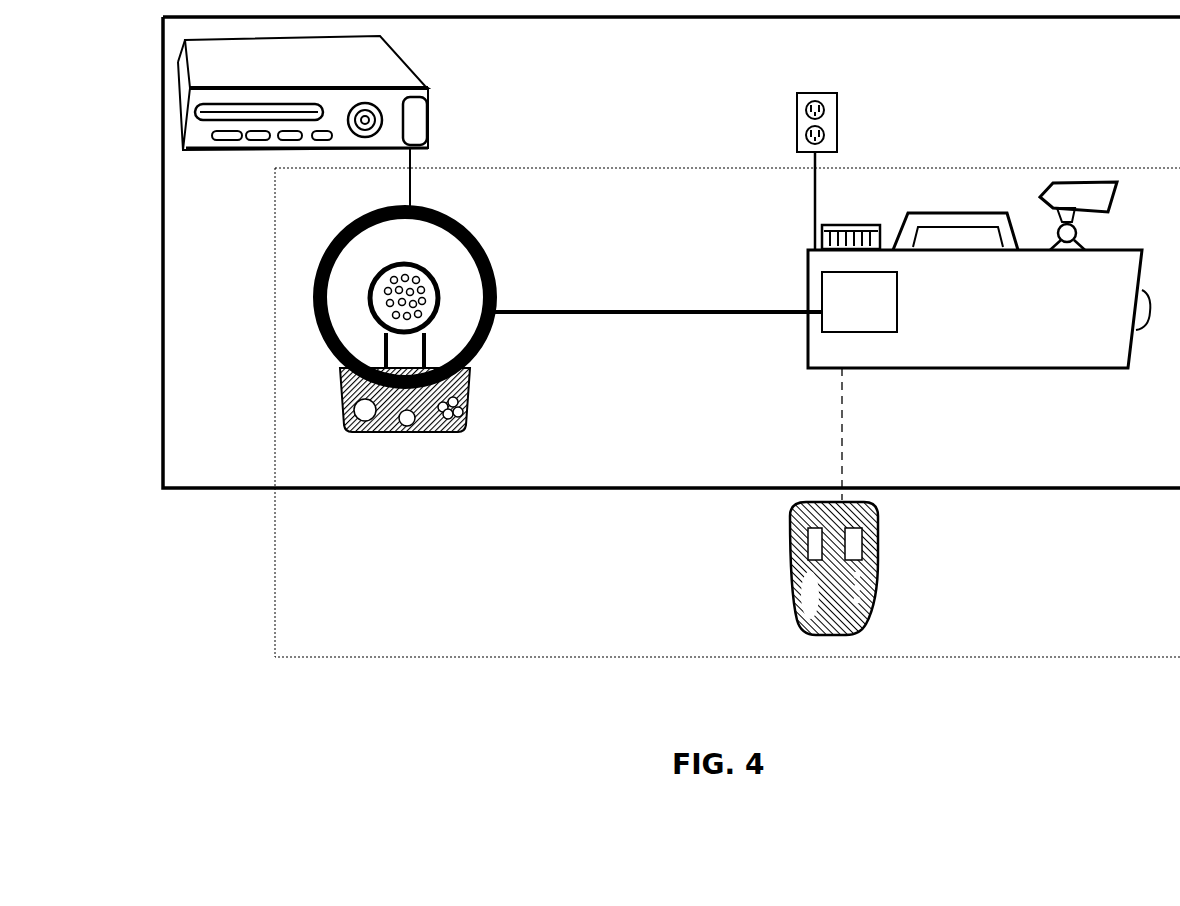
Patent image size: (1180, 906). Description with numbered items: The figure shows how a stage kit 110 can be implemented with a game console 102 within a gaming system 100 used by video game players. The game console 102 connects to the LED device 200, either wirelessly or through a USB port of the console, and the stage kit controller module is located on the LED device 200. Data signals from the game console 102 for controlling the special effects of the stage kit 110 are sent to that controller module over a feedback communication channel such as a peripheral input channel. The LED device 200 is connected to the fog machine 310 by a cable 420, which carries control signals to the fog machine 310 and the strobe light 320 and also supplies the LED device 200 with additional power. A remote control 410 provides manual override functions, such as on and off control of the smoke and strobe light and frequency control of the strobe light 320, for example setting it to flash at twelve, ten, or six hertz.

The gaming system 100 is at (225, 744).
The game console 102 is at (433, 84).
The stage kit 110 is at (275, 527).
The LED device 200 is at (372, 435).
The fog machine 310 is at (1098, 365).
The strobe light 320 is at (1040, 188).
The remote control 410 is at (880, 552).
The cable 420 is at (792, 312).